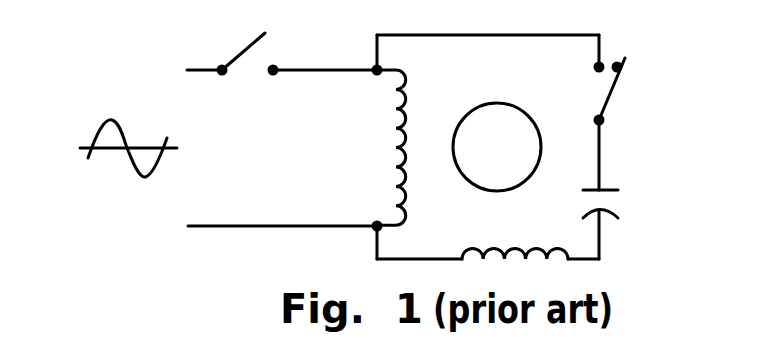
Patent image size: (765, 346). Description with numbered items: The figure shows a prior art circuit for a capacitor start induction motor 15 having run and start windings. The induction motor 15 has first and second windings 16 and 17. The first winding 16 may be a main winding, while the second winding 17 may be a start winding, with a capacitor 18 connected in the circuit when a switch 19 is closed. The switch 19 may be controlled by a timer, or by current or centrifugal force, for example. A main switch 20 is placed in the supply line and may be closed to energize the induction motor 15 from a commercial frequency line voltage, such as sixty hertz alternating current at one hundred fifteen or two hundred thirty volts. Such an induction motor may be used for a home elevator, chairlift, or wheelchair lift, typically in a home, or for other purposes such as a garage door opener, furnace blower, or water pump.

The induction motor 15 is at (506, 92).
The first winding 16 is at (397, 158).
The second winding 17 is at (500, 258).
The capacitor 18 is at (610, 185).
The switch 19 is at (613, 97).
The main switch 20 is at (235, 57).